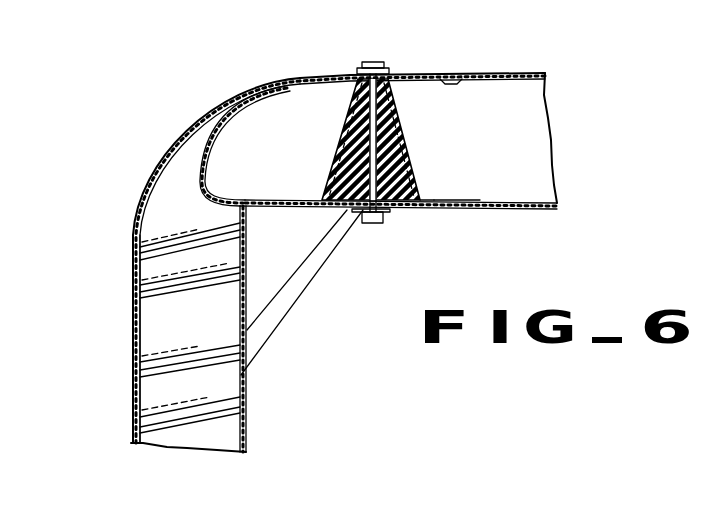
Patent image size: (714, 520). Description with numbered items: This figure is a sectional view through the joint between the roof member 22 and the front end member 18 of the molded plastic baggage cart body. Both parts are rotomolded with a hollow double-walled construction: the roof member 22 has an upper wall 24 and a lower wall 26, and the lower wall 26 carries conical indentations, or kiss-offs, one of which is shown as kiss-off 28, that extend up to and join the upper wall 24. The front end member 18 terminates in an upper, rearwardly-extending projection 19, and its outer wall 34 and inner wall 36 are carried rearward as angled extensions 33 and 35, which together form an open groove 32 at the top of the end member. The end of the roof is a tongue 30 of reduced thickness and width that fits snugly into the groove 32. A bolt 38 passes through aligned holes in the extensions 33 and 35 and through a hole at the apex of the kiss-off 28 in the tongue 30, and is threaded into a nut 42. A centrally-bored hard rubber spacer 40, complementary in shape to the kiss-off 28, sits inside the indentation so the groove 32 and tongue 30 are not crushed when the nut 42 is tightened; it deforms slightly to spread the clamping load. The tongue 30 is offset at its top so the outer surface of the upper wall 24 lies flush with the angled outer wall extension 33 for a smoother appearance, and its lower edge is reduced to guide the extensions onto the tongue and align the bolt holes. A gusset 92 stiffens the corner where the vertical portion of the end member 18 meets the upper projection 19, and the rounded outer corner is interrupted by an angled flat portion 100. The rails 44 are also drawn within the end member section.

The front end member 18 is at (158, 457).
The upper rearwardly-extending projection 19 is at (297, 80).
The roof member 22 is at (565, 128).
The upper wall 24 is at (510, 72).
The lower wall 26 is at (545, 209).
The kiss-off 28 is at (345, 133).
The tongue 30 is at (202, 195).
The open groove 32 is at (457, 210).
The rearward angled extension of outer wall 33 is at (424, 72).
The outer wall 34 is at (133, 425).
The rearward angled extension of inner wall 35 is at (407, 210).
The inner wall 36 is at (250, 415).
The bolt 38 is at (372, 62).
The spacer 40 is at (397, 167).
The nut 42 is at (362, 222).
The rails 44 is at (180, 360).
The gusset 92 is at (268, 340).
The angled flat portion 100 is at (182, 146).